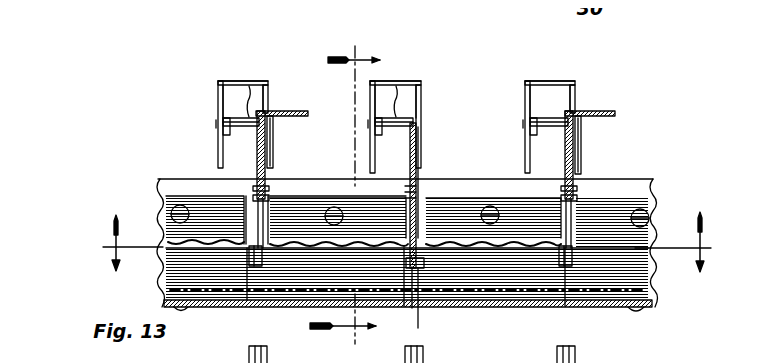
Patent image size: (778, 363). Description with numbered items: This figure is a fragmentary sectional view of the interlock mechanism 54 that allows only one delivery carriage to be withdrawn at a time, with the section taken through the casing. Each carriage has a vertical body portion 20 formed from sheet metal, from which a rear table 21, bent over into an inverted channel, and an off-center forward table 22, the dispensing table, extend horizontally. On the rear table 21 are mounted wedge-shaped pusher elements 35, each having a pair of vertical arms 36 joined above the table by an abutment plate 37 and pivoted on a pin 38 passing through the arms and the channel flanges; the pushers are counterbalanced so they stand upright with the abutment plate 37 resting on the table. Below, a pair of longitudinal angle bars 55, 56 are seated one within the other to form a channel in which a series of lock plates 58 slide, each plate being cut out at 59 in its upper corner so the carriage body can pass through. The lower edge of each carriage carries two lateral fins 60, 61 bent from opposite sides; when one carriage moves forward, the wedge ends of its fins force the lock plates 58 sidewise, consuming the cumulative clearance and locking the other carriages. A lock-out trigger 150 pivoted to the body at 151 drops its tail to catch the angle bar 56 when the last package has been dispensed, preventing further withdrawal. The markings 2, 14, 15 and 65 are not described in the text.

The post 2 is at (246, 157).
The section line 14- 14 is at (411, 242).
The section line 15- 15 is at (345, 191).
The vertical body portion 20 is at (250, 222).
The rear table 21 is at (322, 88).
The forward table 22 is at (284, 104).
The pusher element 35 is at (260, 77).
The vertical arm 36 is at (211, 101).
The abutment plate 37 is at (228, 88).
The pin 38 is at (234, 123).
The interlock mechanism 54 is at (166, 224).
The angle bar 55 is at (186, 250).
The angle bar 56 is at (320, 184).
The lock plate 58 is at (296, 276).
The cut-out 59 is at (436, 186).
The lateral fin 60 is at (410, 302).
The lateral fin 61 is at (248, 242).
The lower rod portion 65 is at (408, 186).
The lock-out trigger 150 is at (266, 130).
The pivot 151 is at (262, 181).